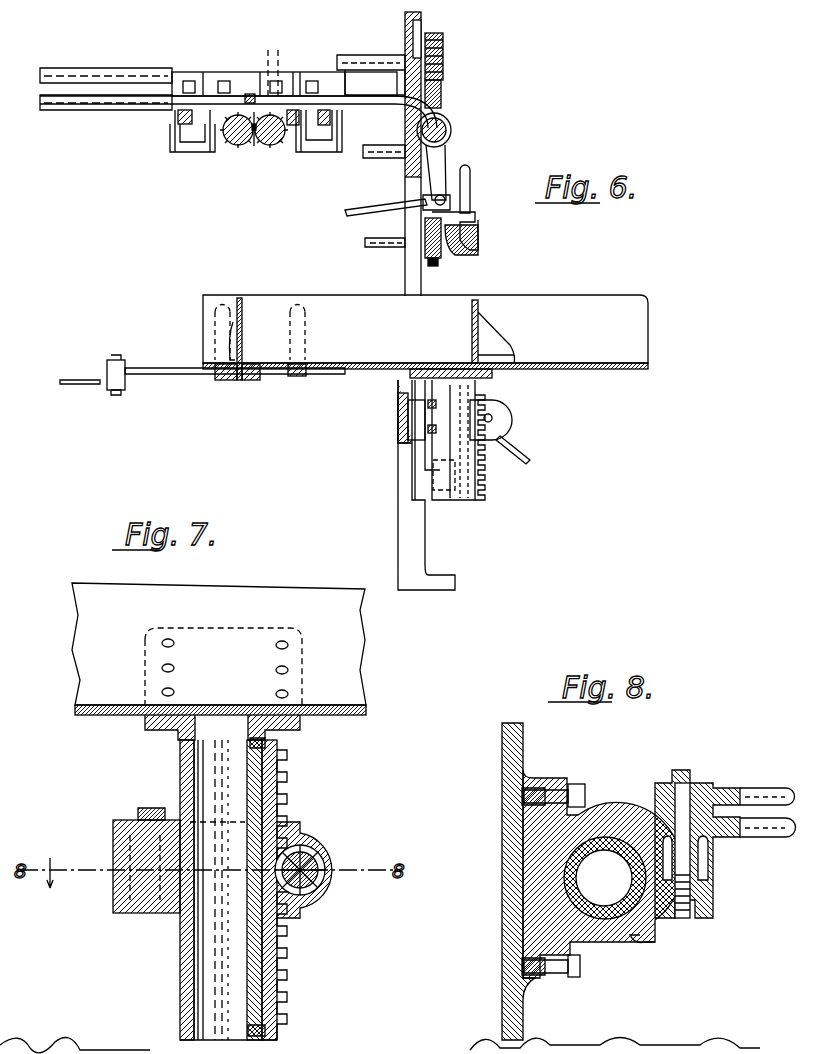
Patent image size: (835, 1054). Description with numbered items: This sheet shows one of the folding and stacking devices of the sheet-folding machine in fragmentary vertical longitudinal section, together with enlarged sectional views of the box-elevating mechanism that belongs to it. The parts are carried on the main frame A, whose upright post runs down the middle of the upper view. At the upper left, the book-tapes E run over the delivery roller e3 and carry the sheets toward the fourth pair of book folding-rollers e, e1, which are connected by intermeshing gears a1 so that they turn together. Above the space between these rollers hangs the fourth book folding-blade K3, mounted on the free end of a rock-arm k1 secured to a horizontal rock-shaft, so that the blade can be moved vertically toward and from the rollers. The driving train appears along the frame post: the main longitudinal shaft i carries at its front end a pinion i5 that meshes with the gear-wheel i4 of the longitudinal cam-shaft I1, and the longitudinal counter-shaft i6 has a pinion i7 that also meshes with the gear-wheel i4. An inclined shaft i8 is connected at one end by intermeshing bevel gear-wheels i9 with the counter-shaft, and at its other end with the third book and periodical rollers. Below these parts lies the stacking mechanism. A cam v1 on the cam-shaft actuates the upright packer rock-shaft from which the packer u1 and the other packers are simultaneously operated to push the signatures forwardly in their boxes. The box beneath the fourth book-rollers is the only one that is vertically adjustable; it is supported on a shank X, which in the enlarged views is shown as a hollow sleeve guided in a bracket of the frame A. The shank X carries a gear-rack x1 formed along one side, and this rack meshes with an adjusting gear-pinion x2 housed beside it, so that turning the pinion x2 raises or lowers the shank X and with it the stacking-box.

In FIG. 6, the main frame A is at (395, 560).
In FIG. 7, the main frame A is at (113, 840).
In FIG. 8, the main frame A is at (500, 762).
In FIG. 6, the book-tapes E is at (182, 114).
In FIG. 6, the delivery roller e3 is at (186, 108).
In FIG. 6, the fourth book folding-blade K3 is at (252, 94).
In FIG. 6, the fourth book folding-roller e1 is at (238, 147).
In FIG. 6, the fourth book folding-roller e is at (272, 147).
In FIG. 6, the intermeshing gears a1 is at (255, 150).
In FIG. 6, the rock-arm k1 is at (340, 98).
In FIG. 6, the main longitudinal shaft i is at (366, 62).
In FIG. 6, the pinion i5 is at (444, 50).
In FIG. 6, the gear-wheel i4 is at (442, 93).
In FIG. 6, the longitudinal cam-shaft I1 is at (372, 186).
In FIG. 6, the inclined shaft i8 is at (471, 175).
In FIG. 6, the longitudinal counter-shaft i6 is at (365, 240).
In FIG. 6, the pinion i7 is at (425, 252).
In FIG. 6, the bevel gear-wheels i9 is at (462, 244).
In FIG. 6, the cam v1 is at (425, 325).
In FIG. 7, the cam v1 is at (231, 661).
In FIG. 6, the packer u1 is at (243, 306).
In FIG. 6, the shank X is at (445, 502).
In FIG. 7, the shank X is at (178, 1012).
In FIG. 8, the shank X is at (602, 874).
In FIG. 6, the gear-rack x1 is at (483, 492).
In FIG. 7, the gear-rack x1 is at (282, 1012).
In FIG. 8, the gear-rack x1 is at (653, 940).
In FIG. 7, the adjusting gear-pinion x2 is at (312, 855).
In FIG. 8, the adjusting gear-pinion x2 is at (700, 922).